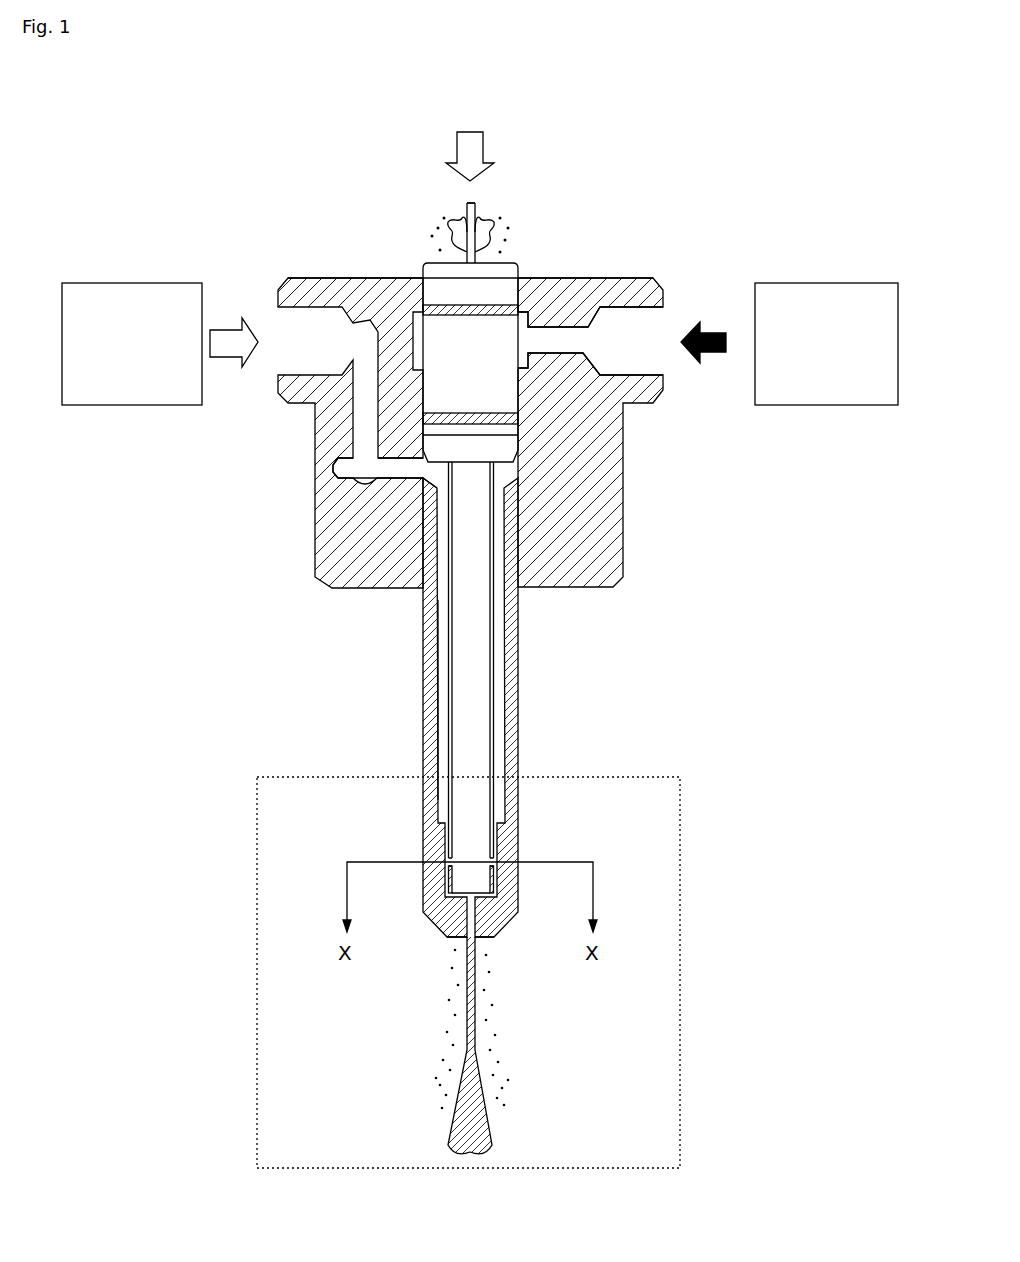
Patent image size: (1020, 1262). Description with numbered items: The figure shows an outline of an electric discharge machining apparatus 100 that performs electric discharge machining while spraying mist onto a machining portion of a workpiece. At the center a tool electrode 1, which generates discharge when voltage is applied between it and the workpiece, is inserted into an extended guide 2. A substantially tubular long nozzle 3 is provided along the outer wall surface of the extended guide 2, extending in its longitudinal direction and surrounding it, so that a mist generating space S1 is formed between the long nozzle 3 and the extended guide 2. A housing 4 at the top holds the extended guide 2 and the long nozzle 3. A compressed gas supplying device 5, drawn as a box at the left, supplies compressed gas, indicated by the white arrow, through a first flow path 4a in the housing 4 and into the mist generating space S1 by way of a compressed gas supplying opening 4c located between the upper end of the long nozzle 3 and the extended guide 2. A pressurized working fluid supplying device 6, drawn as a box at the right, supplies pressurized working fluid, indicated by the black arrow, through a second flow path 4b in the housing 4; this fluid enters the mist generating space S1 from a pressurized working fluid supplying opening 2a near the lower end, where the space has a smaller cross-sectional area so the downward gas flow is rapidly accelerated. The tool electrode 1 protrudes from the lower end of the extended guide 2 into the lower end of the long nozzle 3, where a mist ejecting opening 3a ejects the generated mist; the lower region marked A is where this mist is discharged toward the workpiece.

The electric discharge machining apparatus 100 is at (613, 220).
The tool electrode 1 is at (478, 217).
The extended guide 2 is at (472, 635).
The pressurized working fluid supplying opening 2a is at (448, 862).
The long nozzle 3 is at (513, 723).
The mist ejecting opening 3a is at (462, 937).
The housing 4 is at (607, 460).
The first flow path 4a is at (358, 465).
The second flow path 4b is at (636, 340).
The compressed gas supplying opening 4c is at (438, 477).
The compressed gas supplying device 5 is at (138, 397).
The pressurized working fluid supplying device 6 is at (862, 402).
The mist generating space S1 is at (442, 693).
The region A (enlarged area) A is at (682, 975).